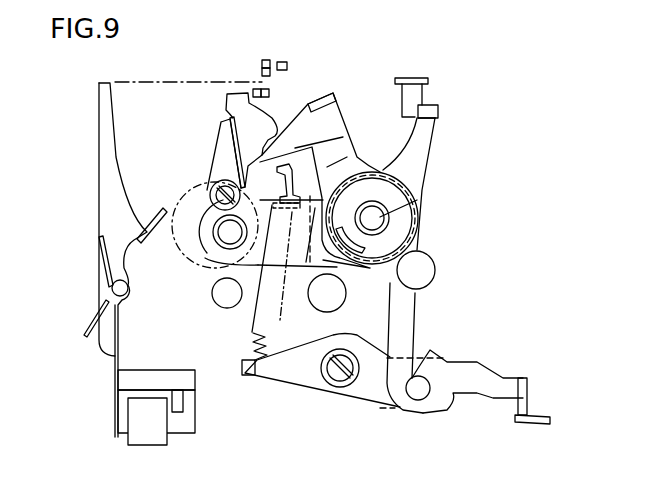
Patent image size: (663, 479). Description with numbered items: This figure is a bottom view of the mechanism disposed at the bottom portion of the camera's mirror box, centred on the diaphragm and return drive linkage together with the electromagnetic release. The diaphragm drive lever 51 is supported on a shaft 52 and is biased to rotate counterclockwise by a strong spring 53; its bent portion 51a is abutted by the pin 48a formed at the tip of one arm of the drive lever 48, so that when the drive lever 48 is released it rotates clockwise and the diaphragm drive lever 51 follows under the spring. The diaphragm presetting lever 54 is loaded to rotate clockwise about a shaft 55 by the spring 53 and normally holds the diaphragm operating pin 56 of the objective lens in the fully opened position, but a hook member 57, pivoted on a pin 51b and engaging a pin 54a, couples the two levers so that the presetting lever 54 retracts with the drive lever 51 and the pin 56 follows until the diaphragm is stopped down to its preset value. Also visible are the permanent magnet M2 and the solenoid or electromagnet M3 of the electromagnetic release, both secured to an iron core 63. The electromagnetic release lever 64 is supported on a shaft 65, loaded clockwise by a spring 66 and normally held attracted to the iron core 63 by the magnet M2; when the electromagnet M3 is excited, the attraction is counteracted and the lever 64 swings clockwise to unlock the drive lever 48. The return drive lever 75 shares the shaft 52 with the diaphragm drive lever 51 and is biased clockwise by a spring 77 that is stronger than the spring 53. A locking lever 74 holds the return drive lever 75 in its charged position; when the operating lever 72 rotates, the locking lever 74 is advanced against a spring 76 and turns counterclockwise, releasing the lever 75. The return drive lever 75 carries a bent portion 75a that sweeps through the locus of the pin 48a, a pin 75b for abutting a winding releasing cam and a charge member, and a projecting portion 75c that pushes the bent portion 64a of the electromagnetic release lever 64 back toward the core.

The drive lever 48 is at (422, 83).
The pin 48a is at (425, 96).
The diaphragm drive lever 51 is at (428, 152).
The bent portion 51a is at (425, 113).
The pin 51b is at (417, 260).
The shaft 52 is at (417, 200).
The spring 53 is at (252, 337).
The diaphragm presetting lever 54 is at (298, 378).
The pin 54a is at (417, 392).
The shaft 55 is at (343, 382).
The diaphragm operating pin 56 is at (527, 418).
The hook member 57 is at (405, 320).
The iron core 63 is at (150, 375).
The electromagnetic release lever 64 is at (262, 64).
The bent portion 64a is at (158, 210).
The shaft 65 is at (110, 290).
The spring 66 is at (108, 274).
The operating lever 72 is at (224, 96).
The locking lever 74 is at (224, 153).
The return drive lever 75 is at (332, 127).
The bent portion 75a is at (320, 97).
The pin 75b is at (230, 308).
The projecting portion 75c is at (190, 257).
The spring 76 is at (231, 132).
The spring 77 is at (345, 270).
The permanent magnet M2 is at (182, 398).
The electromagnet M3 is at (160, 433).